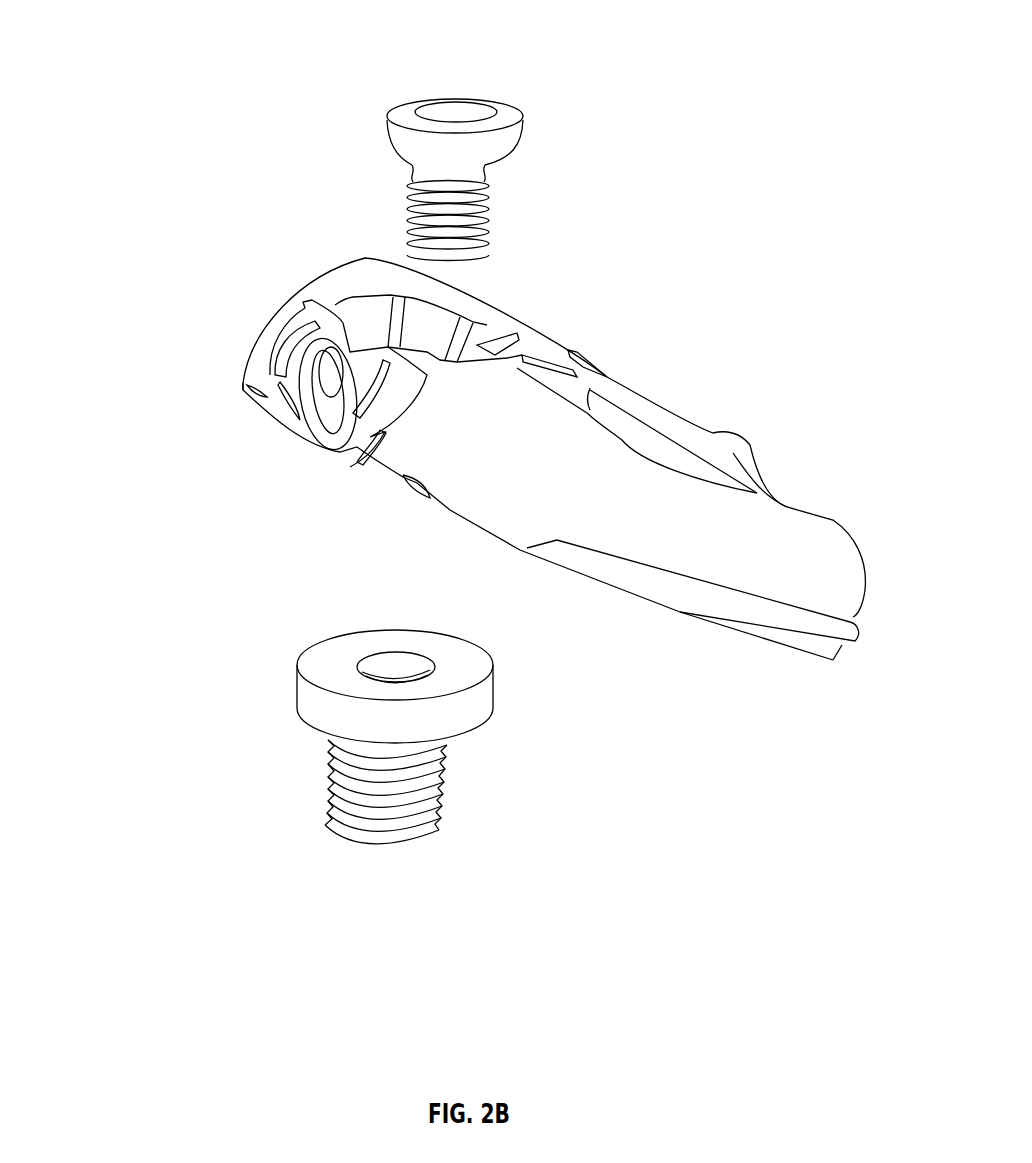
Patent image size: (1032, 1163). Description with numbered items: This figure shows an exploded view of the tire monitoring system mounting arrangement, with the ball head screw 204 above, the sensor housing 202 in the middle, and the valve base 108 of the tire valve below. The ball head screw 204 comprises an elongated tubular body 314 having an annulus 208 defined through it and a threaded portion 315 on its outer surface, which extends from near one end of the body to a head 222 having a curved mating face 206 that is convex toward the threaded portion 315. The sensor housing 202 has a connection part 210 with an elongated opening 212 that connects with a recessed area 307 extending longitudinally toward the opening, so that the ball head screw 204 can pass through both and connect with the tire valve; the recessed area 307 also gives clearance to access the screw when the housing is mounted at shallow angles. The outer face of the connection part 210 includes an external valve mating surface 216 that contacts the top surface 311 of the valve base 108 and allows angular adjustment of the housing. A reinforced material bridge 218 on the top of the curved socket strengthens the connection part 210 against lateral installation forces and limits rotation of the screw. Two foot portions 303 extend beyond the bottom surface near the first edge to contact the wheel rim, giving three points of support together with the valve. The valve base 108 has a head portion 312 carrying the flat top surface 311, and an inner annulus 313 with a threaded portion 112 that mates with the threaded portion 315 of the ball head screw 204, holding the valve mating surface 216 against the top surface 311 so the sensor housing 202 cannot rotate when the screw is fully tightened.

The ball head screw 204 is at (488, 130).
The head 222 is at (488, 100).
The annulus 208 is at (458, 113).
The curved mating face 206 is at (573, 131).
The elongated tubular body 314 is at (390, 177).
The threaded portion 315 is at (406, 204).
The reinforced material bridge 218 is at (345, 338).
The recessed area 307 is at (537, 344).
The valve mating surface 216 is at (267, 378).
The connection part 210 is at (222, 402).
The elongated opening 212 is at (330, 443).
The sensor housing 202 is at (476, 495).
The foot portion 303 is at (845, 654).
The top surface 311 is at (388, 625).
The valve base 108 is at (435, 738).
The head portion 312 is at (435, 690).
The inner annulus 313 is at (395, 655).
The threaded portion 112 is at (405, 662).